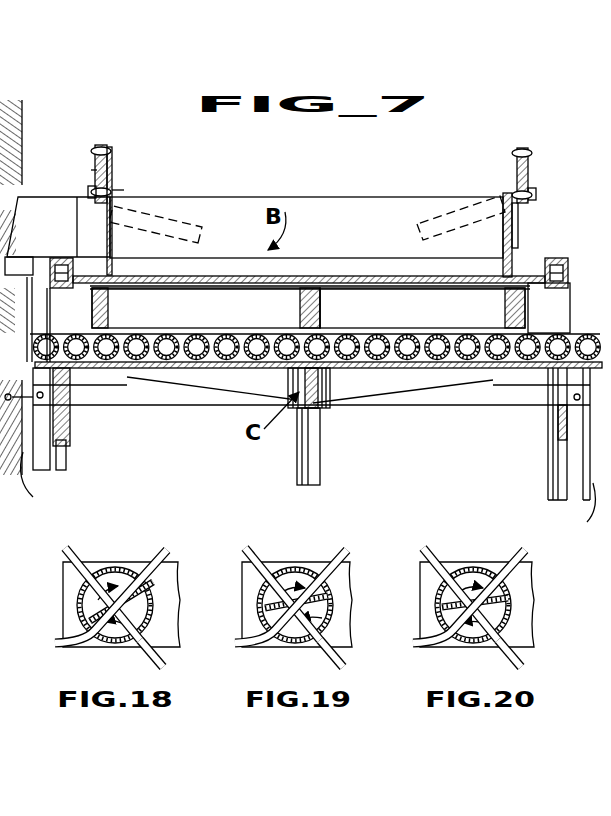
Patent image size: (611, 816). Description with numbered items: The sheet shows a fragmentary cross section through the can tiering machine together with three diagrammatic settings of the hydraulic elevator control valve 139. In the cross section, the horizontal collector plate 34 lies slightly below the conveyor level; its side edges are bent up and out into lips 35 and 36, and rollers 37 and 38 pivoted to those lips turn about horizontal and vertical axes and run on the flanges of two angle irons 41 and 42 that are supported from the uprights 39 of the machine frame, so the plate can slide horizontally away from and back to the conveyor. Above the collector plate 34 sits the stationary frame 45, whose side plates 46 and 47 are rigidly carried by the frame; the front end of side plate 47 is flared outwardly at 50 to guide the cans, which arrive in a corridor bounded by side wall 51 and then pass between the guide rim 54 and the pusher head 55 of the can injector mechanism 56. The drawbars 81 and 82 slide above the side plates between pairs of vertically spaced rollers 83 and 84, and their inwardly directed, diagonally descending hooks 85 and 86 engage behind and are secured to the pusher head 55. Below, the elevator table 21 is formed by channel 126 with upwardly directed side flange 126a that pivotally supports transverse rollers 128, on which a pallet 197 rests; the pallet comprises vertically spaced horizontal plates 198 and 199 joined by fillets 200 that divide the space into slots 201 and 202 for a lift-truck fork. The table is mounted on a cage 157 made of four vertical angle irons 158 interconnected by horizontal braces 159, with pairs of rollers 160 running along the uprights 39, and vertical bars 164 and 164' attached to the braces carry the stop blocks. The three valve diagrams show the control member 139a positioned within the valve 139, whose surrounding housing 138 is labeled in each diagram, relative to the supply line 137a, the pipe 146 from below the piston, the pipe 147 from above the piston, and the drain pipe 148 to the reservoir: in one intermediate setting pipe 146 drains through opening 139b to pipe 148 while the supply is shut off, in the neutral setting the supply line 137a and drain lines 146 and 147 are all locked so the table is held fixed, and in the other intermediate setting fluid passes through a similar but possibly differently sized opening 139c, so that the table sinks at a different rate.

In FIG. 7, the table 21 is at (153, 364).
In FIG. 7, the collector plate 34 is at (383, 286).
In FIG. 7, the lip 35 is at (546, 265).
In FIG. 7, the lip 36 is at (63, 256).
In FIG. 7, the rollers 37 is at (556, 281).
In FIG. 7, the rollers 38 is at (55, 268).
In FIG. 7, the uprights 39 is at (308, 500).
In FIG. 7, the angle iron 41 is at (566, 298).
In FIG. 7, the angle iron 42 is at (104, 292).
In FIG. 7, the stationary frame 45 is at (117, 227).
In FIG. 7, the side plate 46 is at (506, 232).
In FIG. 7, the side plate 47 is at (113, 240).
In FIG. 7, the outwardly flared lip 50 is at (88, 212).
In FIG. 7, the side wall 51 is at (44, 182).
In FIG. 7, the guide rim 54 is at (222, 268).
In FIG. 7, the pusher head 55 is at (378, 208).
In FIG. 7, the can injector mechanism 56 is at (239, 197).
In FIG. 7, the drawbar 81 is at (530, 168).
In FIG. 7, the drawbar 82 is at (97, 170).
In FIG. 7, the rollers 83 is at (100, 146).
In FIG. 7, the rollers 84 is at (96, 193).
In FIG. 7, the hook 85 is at (493, 194).
In FIG. 7, the hook 86 is at (123, 190).
In FIG. 7, the channel 126 is at (166, 366).
In FIG. 7, the side flange 126a is at (208, 357).
In FIG. 7, the transverse rollers 128 is at (467, 354).
In FIG. 18, the supply line 137a is at (157, 552).
In FIG. 19, the supply line 137a is at (338, 556).
In FIG. 20, the supply line 137a is at (506, 556).
In FIG. 18, the housing 138 is at (70, 598).
In FIG. 19, the housing 138 is at (246, 617).
In FIG. 20, the housing 138 is at (424, 618).
In FIG. 18, the valve 139 is at (160, 605).
In FIG. 19, the valve 139 is at (318, 613).
In FIG. 20, the valve 139 is at (500, 613).
In FIG. 18, the control member 139a is at (150, 590).
In FIG. 19, the control member 139a is at (322, 592).
In FIG. 20, the control member 139a is at (510, 598).
In FIG. 18, the opening 139b is at (93, 640).
In FIG. 20, the opening 139c is at (450, 622).
In FIG. 18, the pipe 146 is at (152, 656).
In FIG. 19, the pipe 146 is at (331, 657).
In FIG. 20, the pipe 146 is at (511, 656).
In FIG. 18, the pipe 147 is at (76, 560).
In FIG. 19, the pipe 147 is at (249, 557).
In FIG. 20, the pipe 147 is at (443, 548).
In FIG. 18, the pipe 148 is at (52, 645).
In FIG. 19, the pipe 148 is at (242, 643).
In FIG. 20, the pipe 148 is at (415, 645).
In FIG. 7, the cage 157 is at (540, 406).
In FIG. 7, the vertical angle irons 158 is at (44, 455).
In FIG. 7, the braces 159 is at (62, 427).
In FIG. 7, the rollers 160 is at (574, 397).
In FIG. 7, the vertical bar 164 is at (523, 434).
In FIG. 7, the vertical bar 164' is at (97, 453).
In FIG. 7, the pallet 197 is at (246, 321).
In FIG. 7, the horizontal plate 198 is at (290, 281).
In FIG. 7, the horizontal plate 199 is at (446, 324).
In FIG. 7, the fillets 200 is at (143, 318).
In FIG. 7, the slot 201 is at (176, 300).
In FIG. 7, the slot 202 is at (333, 300).